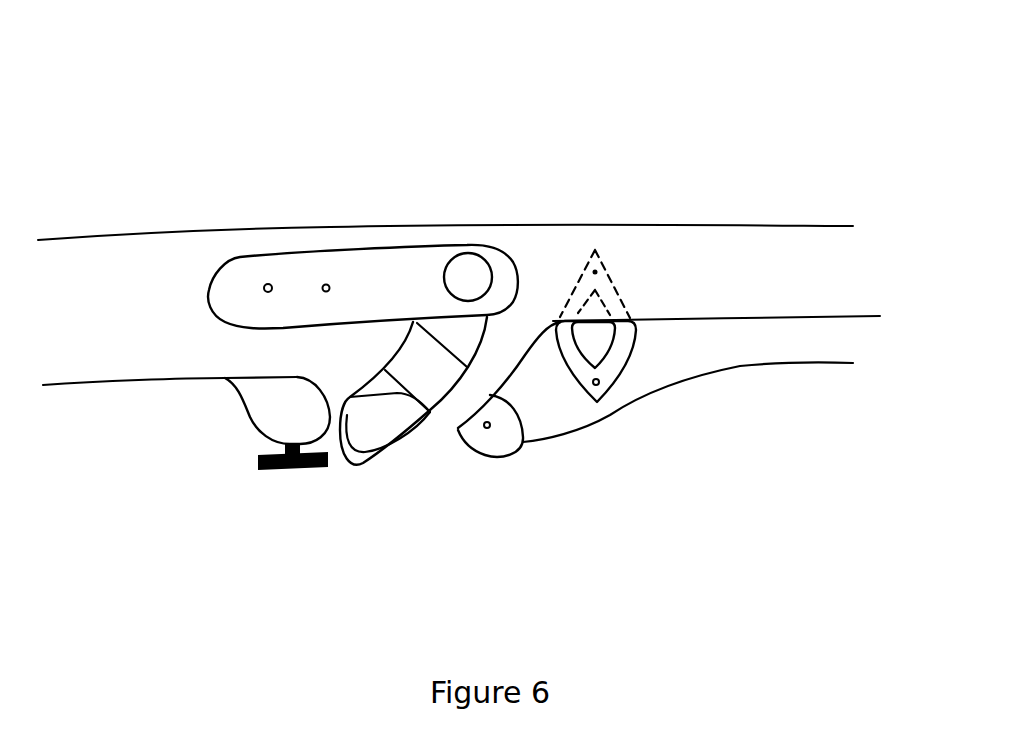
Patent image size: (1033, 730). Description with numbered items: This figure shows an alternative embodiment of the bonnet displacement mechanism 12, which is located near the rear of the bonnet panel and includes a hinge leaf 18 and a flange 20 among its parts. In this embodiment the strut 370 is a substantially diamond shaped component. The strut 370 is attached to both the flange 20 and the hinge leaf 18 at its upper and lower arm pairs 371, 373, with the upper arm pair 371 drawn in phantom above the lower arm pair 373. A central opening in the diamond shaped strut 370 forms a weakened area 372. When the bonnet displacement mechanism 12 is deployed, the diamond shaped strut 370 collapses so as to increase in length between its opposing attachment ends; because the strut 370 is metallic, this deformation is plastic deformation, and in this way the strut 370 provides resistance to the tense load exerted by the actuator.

The bonnet displacement mechanism 12 is at (551, 90).
The hinge leaf 18 is at (745, 348).
The flange 20 is at (112, 285).
The strut 370 is at (615, 352).
The upper arm pair 371 is at (632, 279).
The weakened area 372 is at (588, 357).
The lower arm pair 373 is at (647, 349).